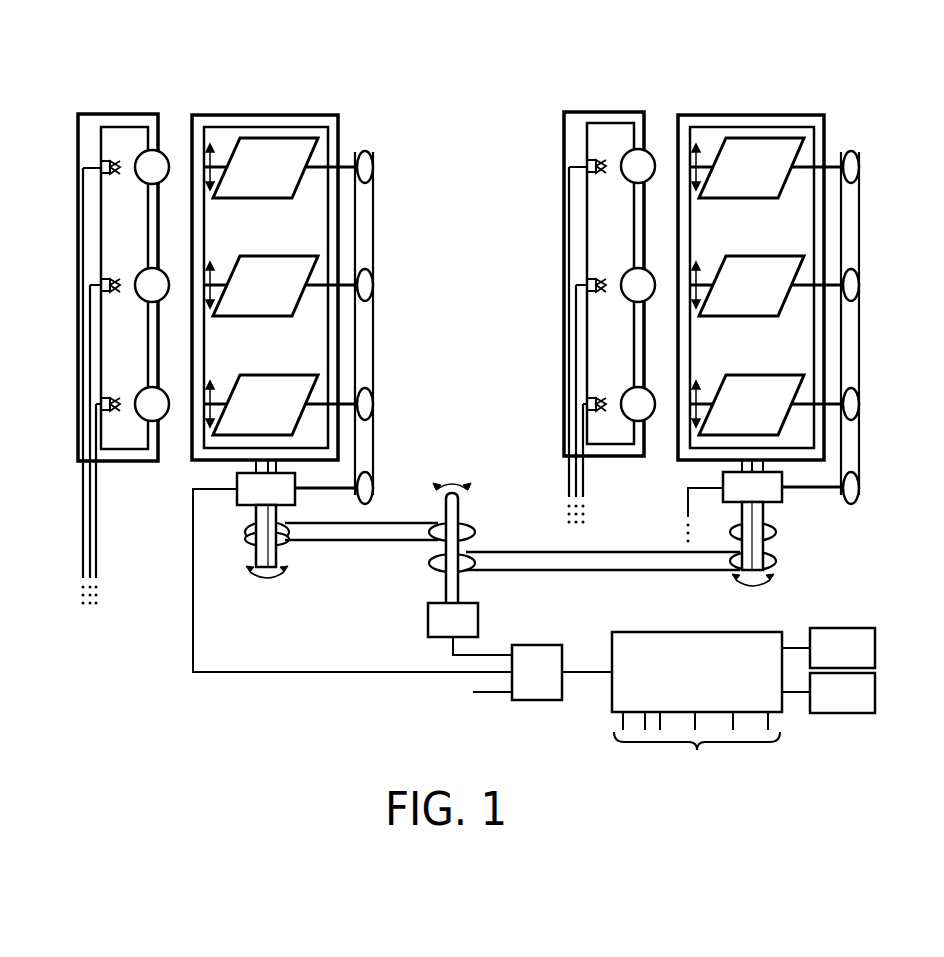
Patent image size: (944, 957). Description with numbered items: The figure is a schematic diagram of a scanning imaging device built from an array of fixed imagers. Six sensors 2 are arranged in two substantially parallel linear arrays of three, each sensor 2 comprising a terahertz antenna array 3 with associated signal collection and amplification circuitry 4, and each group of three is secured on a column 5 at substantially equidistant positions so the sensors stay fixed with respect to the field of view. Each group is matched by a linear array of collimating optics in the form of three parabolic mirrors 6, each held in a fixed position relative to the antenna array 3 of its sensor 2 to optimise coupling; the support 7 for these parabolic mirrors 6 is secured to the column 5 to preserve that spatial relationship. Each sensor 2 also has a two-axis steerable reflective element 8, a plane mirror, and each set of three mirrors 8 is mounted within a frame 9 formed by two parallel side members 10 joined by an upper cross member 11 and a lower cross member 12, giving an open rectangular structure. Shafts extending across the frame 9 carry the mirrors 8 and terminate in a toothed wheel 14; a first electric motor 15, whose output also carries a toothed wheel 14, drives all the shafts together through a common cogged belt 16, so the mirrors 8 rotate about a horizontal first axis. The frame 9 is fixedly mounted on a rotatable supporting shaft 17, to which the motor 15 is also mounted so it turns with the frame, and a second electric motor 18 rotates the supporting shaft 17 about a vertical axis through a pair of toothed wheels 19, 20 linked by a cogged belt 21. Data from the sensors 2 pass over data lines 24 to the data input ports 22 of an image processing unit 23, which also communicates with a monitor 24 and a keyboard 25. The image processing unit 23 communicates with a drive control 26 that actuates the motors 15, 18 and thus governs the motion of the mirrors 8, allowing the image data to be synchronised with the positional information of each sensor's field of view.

The sensor 2 is at (608, 144).
The terahertz antenna array 3 is at (112, 284).
The signal collection and amplification circuitry 4 is at (112, 172).
The column 5 is at (77, 115).
The parabolic mirror 6 is at (159, 179).
The support 7 is at (152, 114).
The reflective element 8 is at (273, 179).
The frame 9 is at (330, 116).
The side member 10 is at (340, 133).
The upper cross member 11 is at (229, 115).
The lower cross member 12 is at (192, 460).
The toothed wheel 14 is at (373, 283).
The electric motor 15 is at (280, 501).
The cogged belt 16 is at (374, 446).
The supporting shaft 17 is at (259, 521).
The second electric motor 18 is at (467, 631).
The toothed wheel 19 is at (284, 533).
The toothed wheel 20 is at (475, 530).
The cogged belt 21 is at (373, 542).
The data input port 22 is at (697, 746).
The image processing unit 23 is at (711, 682).
The data line 24 is at (83, 546).
The keyboard 25 is at (857, 705).
The drive control 26 is at (551, 684).